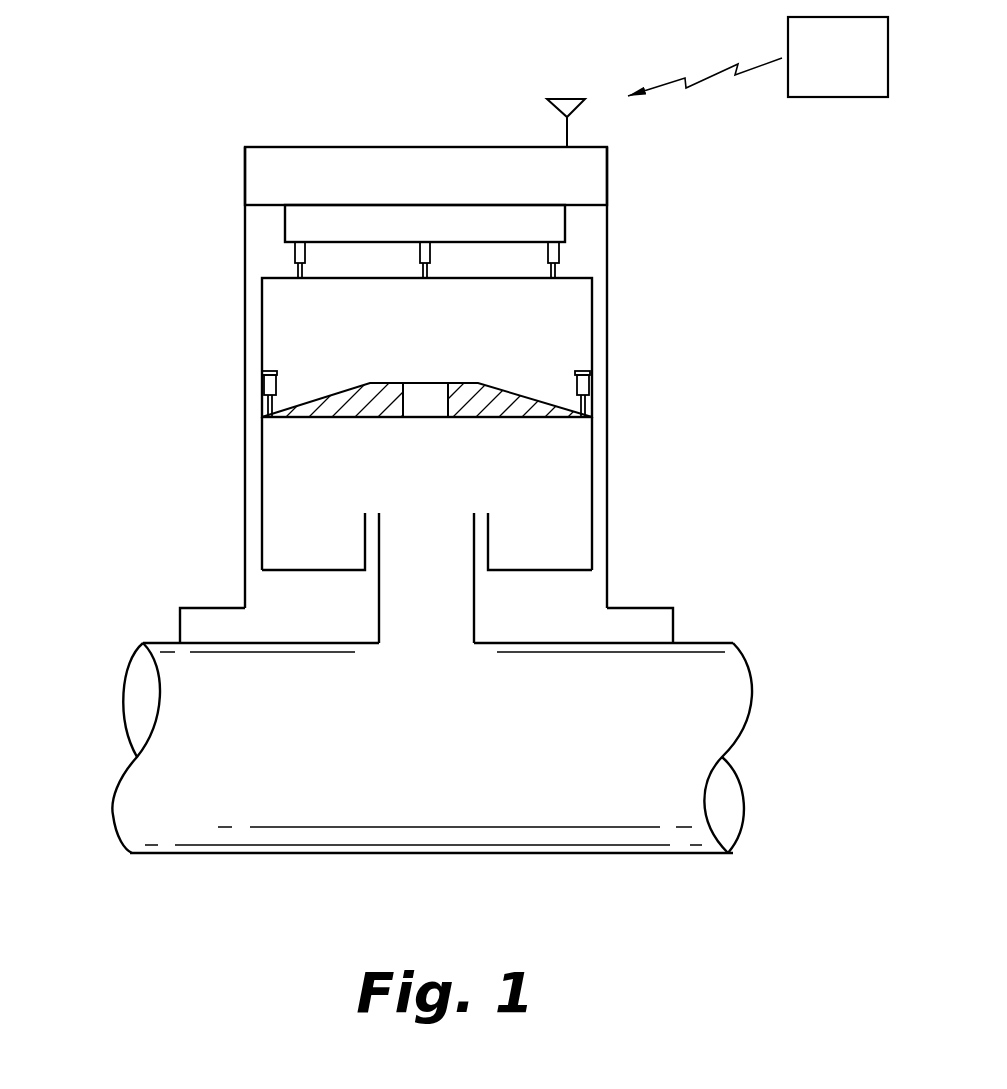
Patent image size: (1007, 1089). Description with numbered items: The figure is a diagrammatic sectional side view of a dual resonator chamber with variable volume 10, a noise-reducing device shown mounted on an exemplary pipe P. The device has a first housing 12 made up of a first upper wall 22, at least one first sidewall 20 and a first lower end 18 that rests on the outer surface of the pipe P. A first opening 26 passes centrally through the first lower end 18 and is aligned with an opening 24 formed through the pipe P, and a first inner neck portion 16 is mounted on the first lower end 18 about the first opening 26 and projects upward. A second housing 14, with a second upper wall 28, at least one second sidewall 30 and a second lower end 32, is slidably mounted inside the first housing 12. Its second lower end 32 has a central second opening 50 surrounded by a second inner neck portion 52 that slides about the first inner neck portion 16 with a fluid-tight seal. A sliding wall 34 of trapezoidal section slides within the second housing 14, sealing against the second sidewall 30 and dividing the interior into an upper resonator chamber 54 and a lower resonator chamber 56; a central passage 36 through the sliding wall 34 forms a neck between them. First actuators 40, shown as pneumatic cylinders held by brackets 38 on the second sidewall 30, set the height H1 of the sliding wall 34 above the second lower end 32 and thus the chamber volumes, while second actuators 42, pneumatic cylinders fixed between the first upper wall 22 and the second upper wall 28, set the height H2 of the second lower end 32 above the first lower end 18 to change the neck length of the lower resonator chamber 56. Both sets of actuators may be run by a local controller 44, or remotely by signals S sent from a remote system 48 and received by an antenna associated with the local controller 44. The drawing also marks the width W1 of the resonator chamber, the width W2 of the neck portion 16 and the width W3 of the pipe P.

The dual resonator chamber with variable volume 10 is at (673, 243).
The first housing 12 is at (608, 405).
The second housing 14 is at (607, 505).
The first inner neck portion 16 is at (381, 604).
The first lower end 18 is at (637, 608).
The first sidewall 20 is at (246, 378).
The first upper wall 22 is at (335, 147).
The opening 24 is at (459, 664).
The first opening 26 is at (452, 640).
The second upper wall 28 is at (355, 278).
The second sidewall 30 is at (260, 486).
The second lower end 32 is at (293, 568).
The sliding wall 34 is at (363, 418).
The passage 36 is at (431, 380).
The brackets 38 is at (268, 372).
The first actuator 40 is at (281, 389).
The second actuator 42 is at (307, 258).
The local controller 44 is at (502, 157).
The remote system 48 is at (852, 97).
The second opening 50 is at (392, 511).
The second inner neck portion 52 is at (490, 542).
The upper resonator chamber 54 is at (556, 308).
The lower resonator chamber 56 is at (548, 453).
The signals S is at (719, 76).
The pipe P is at (660, 855).
The width of the resonator chamber W1 is at (592, 278).
The width of the neck portion W2 is at (474, 643).
The width of the pipe W3 is at (733, 643).
The height of the sliding wall H1 is at (262, 416).
The height of the second lower end H2 is at (474, 643).